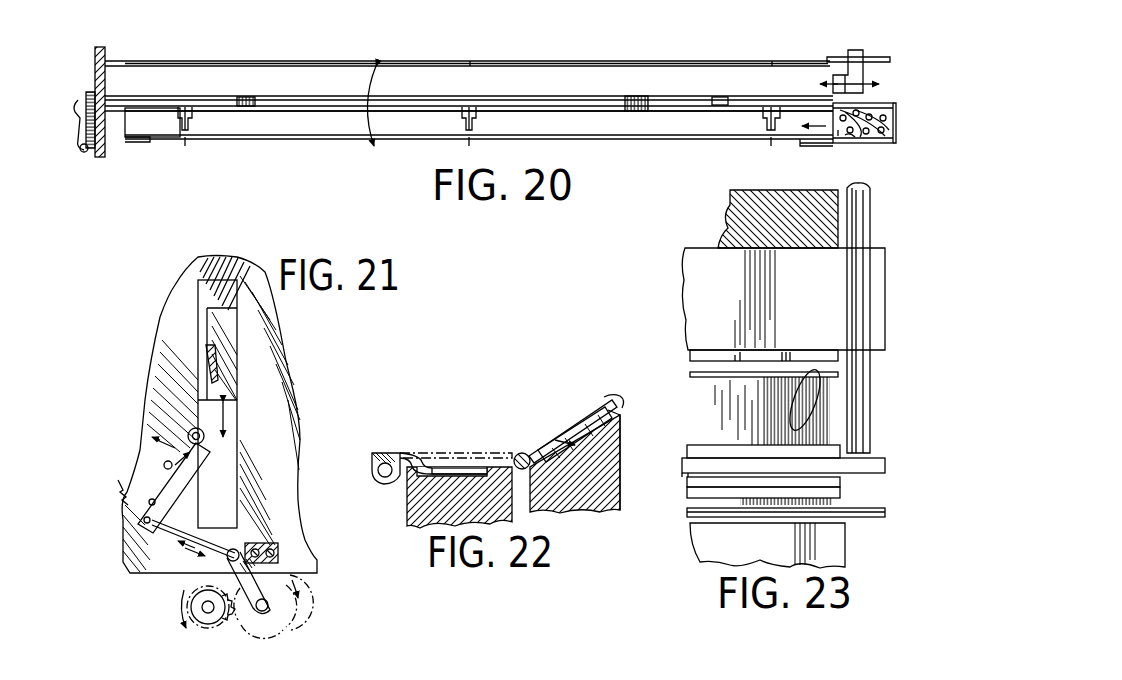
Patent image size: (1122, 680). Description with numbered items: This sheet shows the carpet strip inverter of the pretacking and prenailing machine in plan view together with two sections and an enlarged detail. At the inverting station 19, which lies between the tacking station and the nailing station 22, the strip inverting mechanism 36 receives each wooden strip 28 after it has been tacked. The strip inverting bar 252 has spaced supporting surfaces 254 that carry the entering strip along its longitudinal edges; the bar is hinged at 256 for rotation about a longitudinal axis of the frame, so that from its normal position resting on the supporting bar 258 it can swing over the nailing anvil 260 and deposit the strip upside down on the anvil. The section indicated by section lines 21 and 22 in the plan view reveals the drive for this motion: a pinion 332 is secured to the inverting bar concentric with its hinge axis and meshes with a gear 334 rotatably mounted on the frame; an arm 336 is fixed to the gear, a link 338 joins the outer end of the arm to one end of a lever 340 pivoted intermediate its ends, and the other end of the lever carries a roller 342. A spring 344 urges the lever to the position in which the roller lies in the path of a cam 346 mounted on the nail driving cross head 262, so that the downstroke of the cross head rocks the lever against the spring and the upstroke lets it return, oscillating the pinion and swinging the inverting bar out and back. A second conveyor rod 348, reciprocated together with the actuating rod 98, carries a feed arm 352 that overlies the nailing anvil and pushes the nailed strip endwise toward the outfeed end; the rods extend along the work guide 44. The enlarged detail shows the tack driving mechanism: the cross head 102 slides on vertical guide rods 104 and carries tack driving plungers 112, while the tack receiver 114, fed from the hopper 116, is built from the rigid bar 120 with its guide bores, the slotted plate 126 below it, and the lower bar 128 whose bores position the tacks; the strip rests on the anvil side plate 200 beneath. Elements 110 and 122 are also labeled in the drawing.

In FIG. 20, the carpet strip inverting station 19 is at (513, 60).
In FIG. 20, the section line 21— 21 is at (93, 48).
In FIG. 20, the nailing station 22 is at (127, 48).
In FIG. 20, the wooden slat or strip 28 is at (875, 143).
In FIG. 22, the wooden slat or strip 28 is at (614, 422).
In FIG. 22, the strip inverting mechanism 36 is at (408, 440).
In FIG. 20, the work guide 44 is at (701, 5).
In FIG. 23, the actuating rod 98 is at (884, 514).
In FIG. 23, the cross head 102 is at (783, 299).
In FIG. 23, the vertical guide rods 104 is at (858, 194).
In FIG. 23, the support plate 110 is at (720, 356).
In FIG. 23, the tack driving plungers 112 is at (812, 360).
In FIG. 23, the tack receiver 114 is at (683, 479).
In FIG. 23, the tack hopper 116 is at (752, 202).
In FIG. 23, the rigid bar 120 is at (684, 466).
In FIG. 23, the plate 122 is at (705, 448).
In FIG. 23, the plate 126 is at (842, 482).
In FIG. 23, the lower bar 128 is at (842, 496).
In FIG. 23, the anvil side plate 200 is at (767, 545).
In FIG. 20, the strip inverting bar 252 is at (185, 147).
In FIG. 22, the strip inverting bar 252 is at (665, 374).
In FIG. 20, the supporting surfaces 254 is at (275, 113).
In FIG. 22, the supporting surfaces 254 is at (545, 432).
In FIG. 22, the hinge 256 is at (505, 455).
In FIG. 20, the supporting bar 258 is at (148, 148).
In FIG. 22, the supporting bar 258 is at (622, 496).
In FIG. 20, the nailing anvil 260 is at (469, 89).
In FIG. 22, the nailing anvil 260 is at (426, 506).
In FIG. 21, the nail driving cross head 262 is at (222, 328).
In FIG. 20, the pinion 332 is at (107, 72).
In FIG. 21, the pinion 332 is at (208, 628).
In FIG. 20, the gear 334 is at (96, 150).
In FIG. 21, the gear 334 is at (270, 632).
In FIG. 20, the arm 336 is at (84, 112).
In FIG. 21, the arm 336 is at (280, 546).
In FIG. 21, the link 338 is at (152, 573).
In FIG. 21, the lever 340 is at (155, 468).
In FIG. 21, the roller 342 is at (188, 430).
In FIG. 21, the spring 344 is at (130, 507).
In FIG. 21, the cam 346 is at (204, 345).
In FIG. 20, the second conveyor rod 348 is at (870, 57).
In FIG. 22, the second conveyor rod 348 is at (388, 452).
In FIG. 20, the feed arm 352 is at (838, 78).
In FIG. 22, the feed arm 352 is at (448, 476).